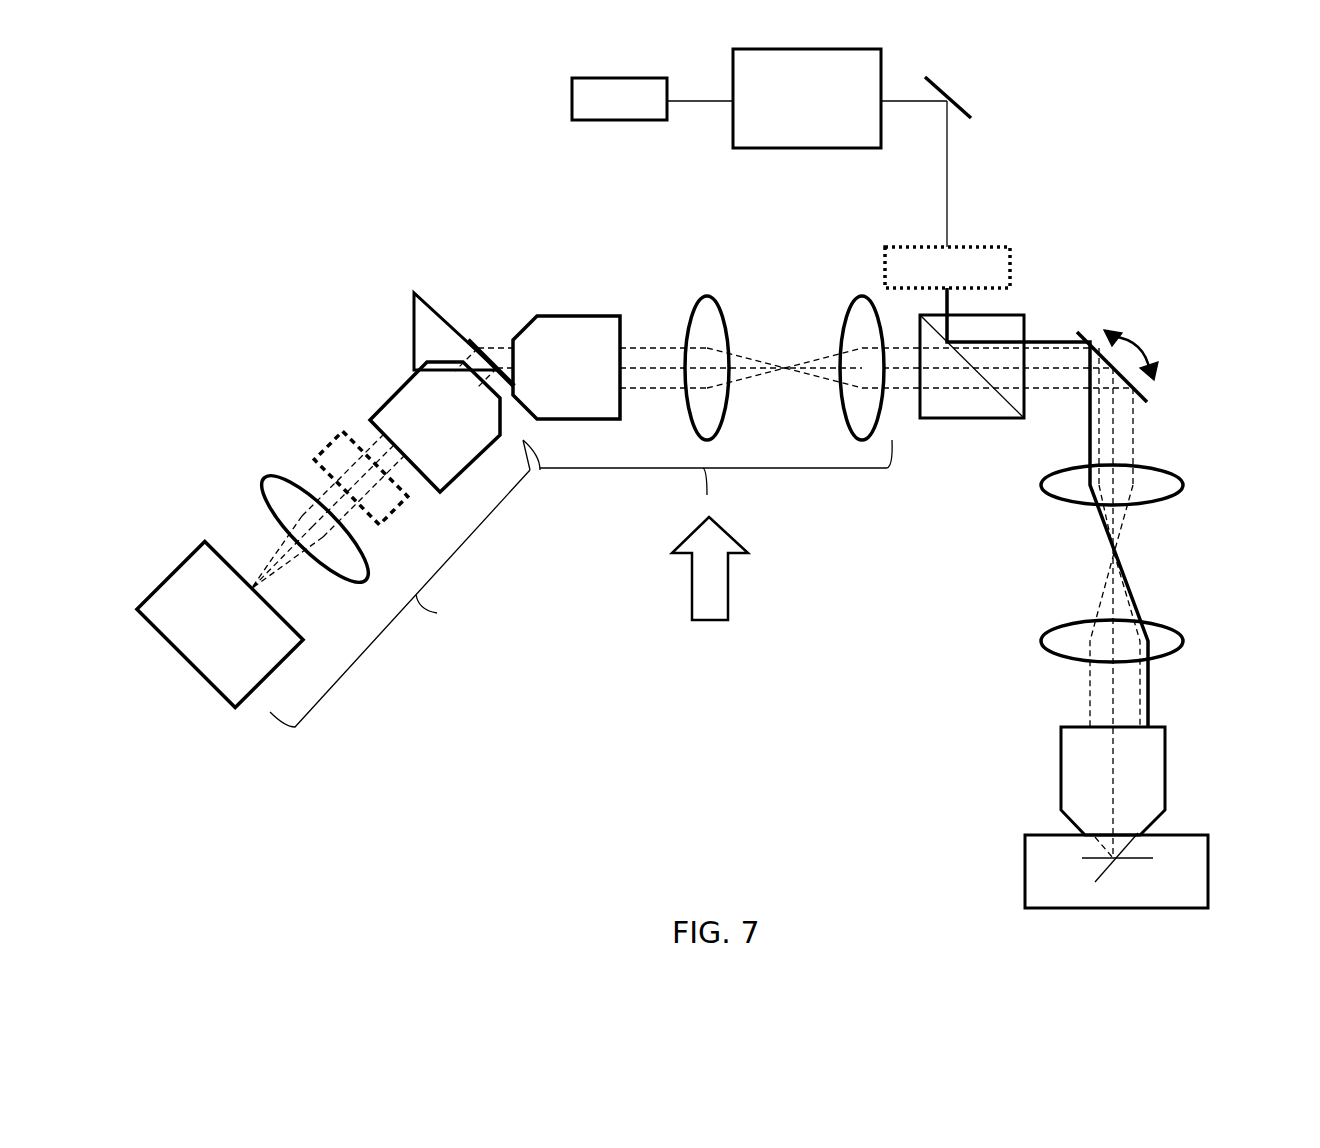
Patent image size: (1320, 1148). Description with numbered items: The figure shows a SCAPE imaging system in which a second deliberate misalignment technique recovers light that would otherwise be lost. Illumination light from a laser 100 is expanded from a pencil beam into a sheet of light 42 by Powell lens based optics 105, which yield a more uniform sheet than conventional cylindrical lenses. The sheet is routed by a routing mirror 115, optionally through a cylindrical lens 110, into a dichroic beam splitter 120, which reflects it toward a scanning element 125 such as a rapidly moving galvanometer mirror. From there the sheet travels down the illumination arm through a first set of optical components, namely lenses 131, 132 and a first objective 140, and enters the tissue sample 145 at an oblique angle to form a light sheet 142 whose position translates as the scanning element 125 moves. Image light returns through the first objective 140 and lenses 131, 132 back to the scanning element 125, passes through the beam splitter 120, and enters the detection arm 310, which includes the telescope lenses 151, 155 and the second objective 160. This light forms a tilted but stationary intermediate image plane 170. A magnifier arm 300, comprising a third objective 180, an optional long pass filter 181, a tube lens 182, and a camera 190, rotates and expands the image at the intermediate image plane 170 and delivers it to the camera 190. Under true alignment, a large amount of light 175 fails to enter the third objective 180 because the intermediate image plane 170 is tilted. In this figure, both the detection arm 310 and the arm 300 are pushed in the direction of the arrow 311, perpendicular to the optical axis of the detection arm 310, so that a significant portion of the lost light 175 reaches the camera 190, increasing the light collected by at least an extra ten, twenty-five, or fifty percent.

The laser 100 is at (588, 76).
The Powell lens based optics 105 is at (763, 148).
The sheet of light 42 is at (912, 101).
The routing mirror 115 is at (966, 110).
The cylindrical lens 110 is at (1010, 260).
The beam splitter 120 is at (1022, 318).
The scanning element 125 is at (1147, 392).
The lens 131 is at (1183, 497).
The lens 132 is at (1183, 652).
The first objective 140 is at (1165, 775).
The tissue sample 145 is at (1208, 872).
The light sheet 142 is at (1107, 875).
The lens 151 is at (861, 297).
The lens 155 is at (710, 297).
The second objective 160 is at (558, 316).
The intermediate image plane 170 is at (490, 345).
The lost light 175 is at (430, 300).
The third objective 180 is at (400, 385).
The long pass filter 181 is at (340, 440).
The tube lens 182 is at (283, 478).
The camera 190 is at (188, 555).
The arm 300 is at (320, 705).
The detection arm 310 is at (845, 470).
The arrow 311 is at (690, 602).